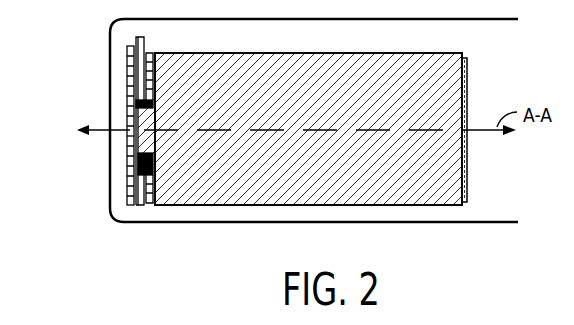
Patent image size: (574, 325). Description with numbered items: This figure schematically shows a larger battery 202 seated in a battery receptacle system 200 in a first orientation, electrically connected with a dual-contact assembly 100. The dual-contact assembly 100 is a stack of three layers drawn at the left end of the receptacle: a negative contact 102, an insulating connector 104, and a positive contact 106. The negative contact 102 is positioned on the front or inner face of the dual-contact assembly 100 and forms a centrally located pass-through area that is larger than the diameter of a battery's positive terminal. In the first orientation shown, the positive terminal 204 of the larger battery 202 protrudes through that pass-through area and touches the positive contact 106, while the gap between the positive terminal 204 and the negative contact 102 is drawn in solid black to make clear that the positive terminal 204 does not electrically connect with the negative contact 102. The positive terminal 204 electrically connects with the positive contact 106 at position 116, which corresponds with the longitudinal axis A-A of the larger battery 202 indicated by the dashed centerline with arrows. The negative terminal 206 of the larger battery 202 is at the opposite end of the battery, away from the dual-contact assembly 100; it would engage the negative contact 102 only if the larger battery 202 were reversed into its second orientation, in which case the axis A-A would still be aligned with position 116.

The dual-contact assembly 100 is at (117, 163).
The negative contact 102 is at (147, 207).
The insulating connector 104 is at (142, 207).
The positive contact 106 is at (133, 207).
The position 116 is at (127, 135).
The battery receptacle system 200 is at (500, 20).
The larger battery 202 is at (387, 53).
The positive terminal 204 is at (148, 104).
The negative terminal 206 is at (467, 100).